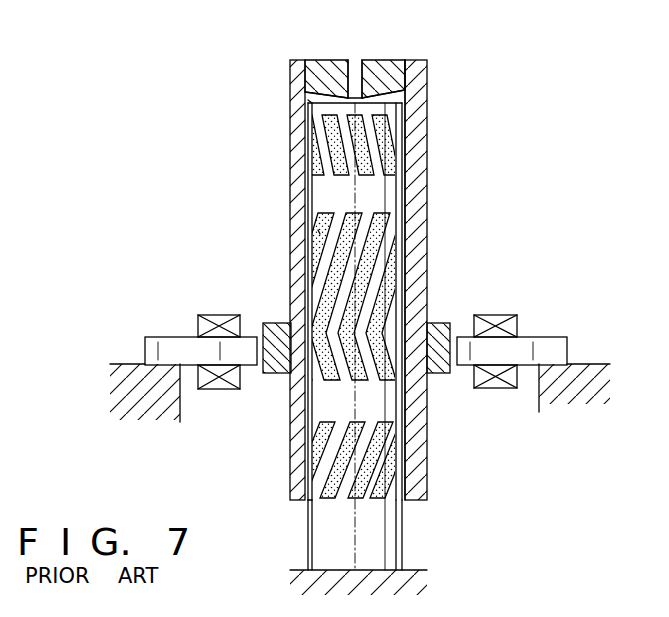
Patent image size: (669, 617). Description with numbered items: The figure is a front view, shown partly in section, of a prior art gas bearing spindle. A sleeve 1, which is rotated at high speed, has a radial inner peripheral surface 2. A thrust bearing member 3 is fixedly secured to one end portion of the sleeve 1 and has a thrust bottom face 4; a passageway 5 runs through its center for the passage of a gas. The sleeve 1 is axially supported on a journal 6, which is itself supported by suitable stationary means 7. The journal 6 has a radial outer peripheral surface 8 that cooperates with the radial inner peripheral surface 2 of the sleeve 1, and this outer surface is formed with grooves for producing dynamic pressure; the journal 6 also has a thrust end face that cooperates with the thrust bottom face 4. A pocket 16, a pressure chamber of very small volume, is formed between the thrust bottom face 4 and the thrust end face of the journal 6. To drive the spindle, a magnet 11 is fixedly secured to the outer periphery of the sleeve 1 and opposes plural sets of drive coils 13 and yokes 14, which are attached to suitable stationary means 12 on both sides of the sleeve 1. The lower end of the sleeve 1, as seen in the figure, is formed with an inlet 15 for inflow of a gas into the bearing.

The sleeve 1 is at (398, 252).
The radial inner peripheral surface 2 is at (404, 188).
The thrust bearing member 3 is at (337, 59).
The thrust bottom face 4 is at (316, 93).
The passageway 5 is at (356, 62).
The journal 6 is at (411, 537).
The stationary means 7 is at (413, 588).
The radial outer peripheral surface 8 is at (307, 190).
The magnet 11 is at (276, 323).
The stationary means 12 is at (583, 364).
The drive coils 13 is at (214, 315).
The yokes 14 is at (174, 337).
The inlet 15 is at (310, 502).
The pocket 16 is at (398, 98).